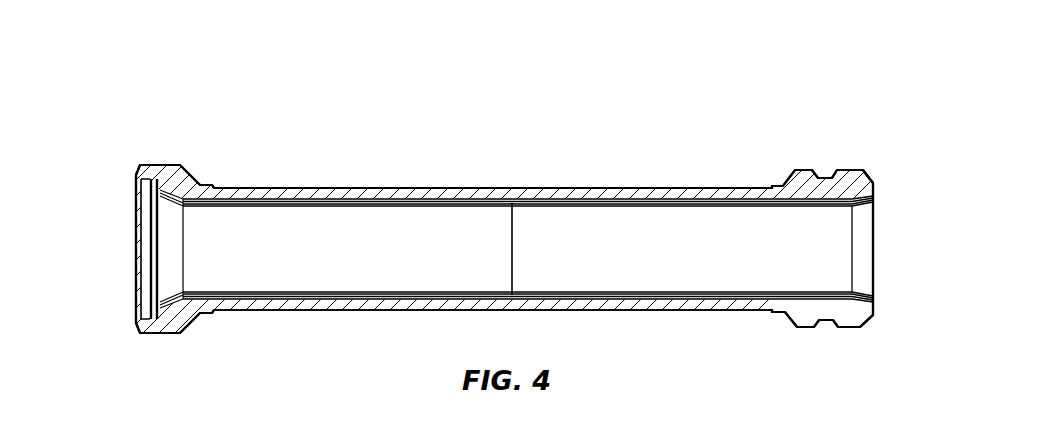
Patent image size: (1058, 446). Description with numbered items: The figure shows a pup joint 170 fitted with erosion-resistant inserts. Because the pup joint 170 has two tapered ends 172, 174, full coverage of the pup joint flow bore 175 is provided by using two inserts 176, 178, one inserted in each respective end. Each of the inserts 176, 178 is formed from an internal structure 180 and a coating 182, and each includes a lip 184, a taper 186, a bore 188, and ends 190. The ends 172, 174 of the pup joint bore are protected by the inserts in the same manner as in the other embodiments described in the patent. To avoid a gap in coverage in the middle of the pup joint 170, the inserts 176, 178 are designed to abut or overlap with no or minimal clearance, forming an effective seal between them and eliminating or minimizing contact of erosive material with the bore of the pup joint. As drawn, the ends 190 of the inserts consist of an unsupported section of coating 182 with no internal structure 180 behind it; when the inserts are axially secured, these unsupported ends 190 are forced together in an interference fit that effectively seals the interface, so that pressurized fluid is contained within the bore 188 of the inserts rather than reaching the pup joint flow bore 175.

The pup joint 170 is at (114, 133).
The tapered end 172 is at (138, 253).
The tapered end 174 is at (873, 253).
The pup joint flow bore 175 is at (198, 228).
The insert 176 is at (345, 200).
The insert 178 is at (667, 198).
The internal structure 180 is at (413, 203).
The coating 182 is at (493, 202).
The lip 184 is at (875, 178).
The taper 186 is at (858, 206).
The bore 188 is at (856, 202).
The ends 190 is at (509, 203).